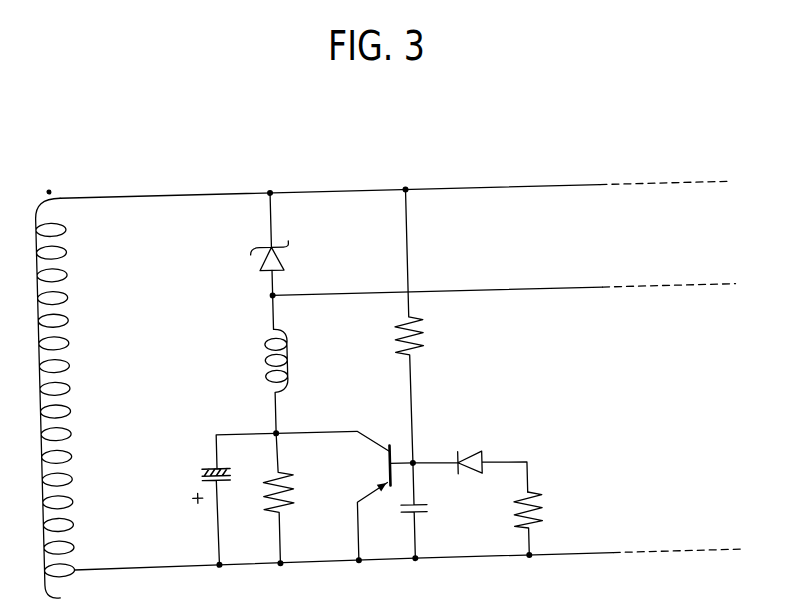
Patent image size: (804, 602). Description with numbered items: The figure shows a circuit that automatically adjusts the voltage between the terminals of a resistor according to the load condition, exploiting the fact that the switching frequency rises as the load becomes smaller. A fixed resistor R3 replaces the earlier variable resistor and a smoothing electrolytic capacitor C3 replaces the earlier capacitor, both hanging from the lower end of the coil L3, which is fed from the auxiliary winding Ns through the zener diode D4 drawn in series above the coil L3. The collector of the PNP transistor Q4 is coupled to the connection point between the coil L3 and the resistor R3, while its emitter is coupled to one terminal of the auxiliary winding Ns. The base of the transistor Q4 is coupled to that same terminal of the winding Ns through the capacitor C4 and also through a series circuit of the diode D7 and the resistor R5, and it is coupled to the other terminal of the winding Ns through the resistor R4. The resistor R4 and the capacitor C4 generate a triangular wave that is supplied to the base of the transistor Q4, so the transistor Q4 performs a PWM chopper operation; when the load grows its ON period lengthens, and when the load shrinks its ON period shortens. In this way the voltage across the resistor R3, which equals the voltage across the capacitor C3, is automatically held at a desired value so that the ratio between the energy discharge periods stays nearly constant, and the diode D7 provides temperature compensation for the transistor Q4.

The auxiliary winding Ns is at (71, 397).
The zener diode D4 is at (256, 244).
The coil L3 is at (263, 364).
The smoothing electrolytic capacitor C3 is at (225, 499).
The resistor R3 is at (268, 498).
The resistor R4 is at (425, 325).
The transistor Q4 is at (345, 496).
The diode D7 is at (470, 460).
The capacitor C4 is at (428, 510).
The resistor R5 is at (543, 523).